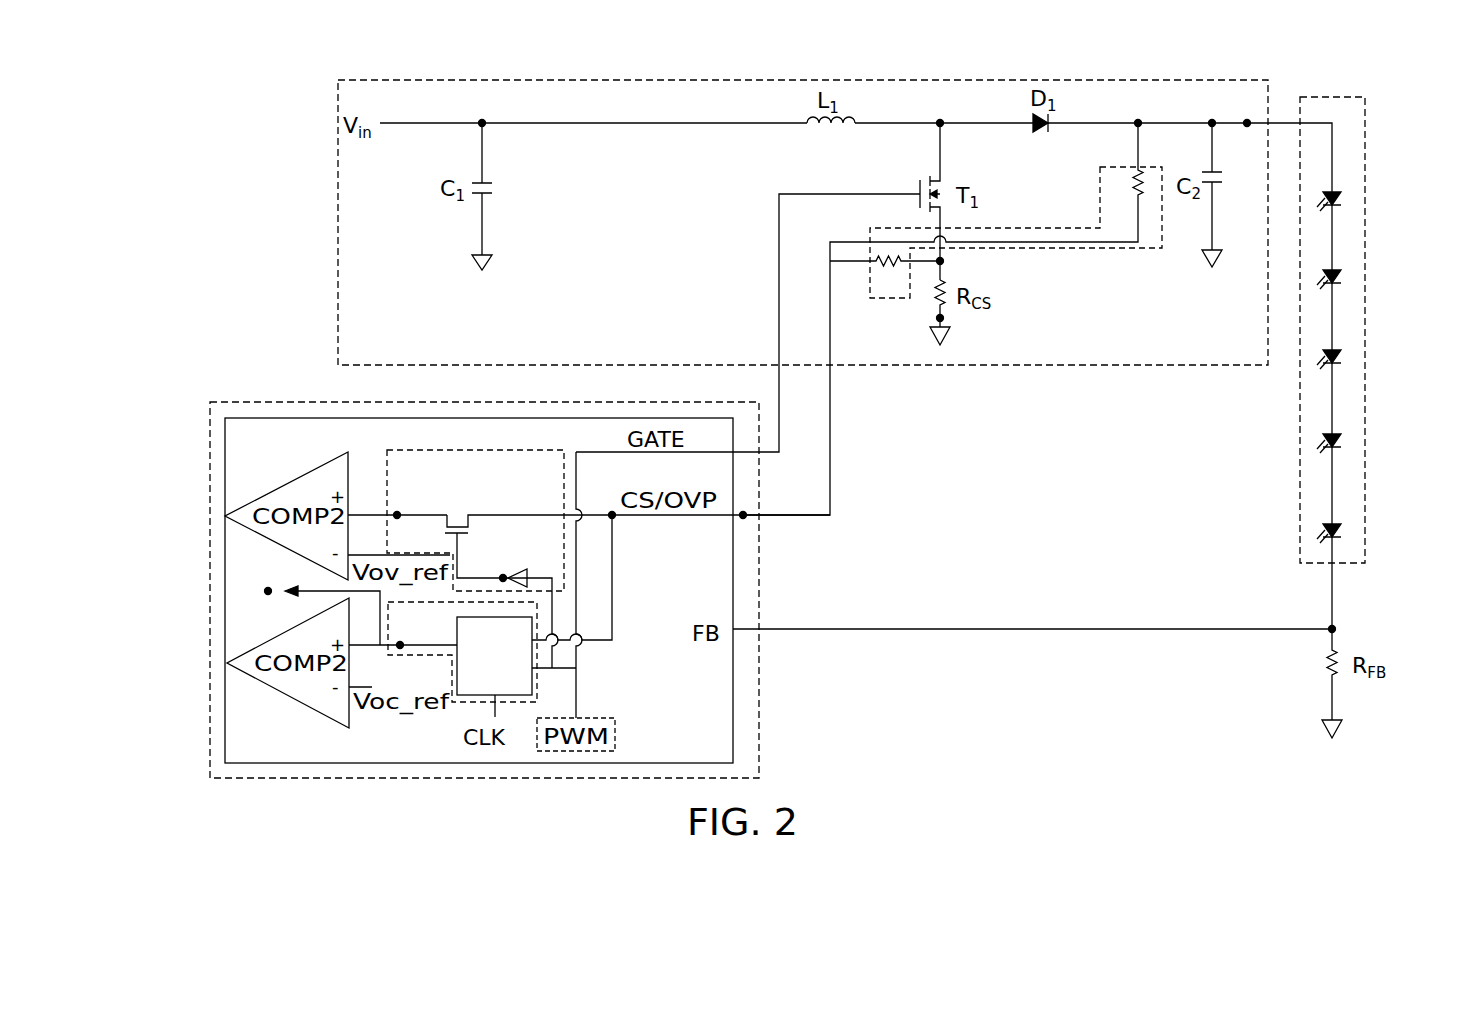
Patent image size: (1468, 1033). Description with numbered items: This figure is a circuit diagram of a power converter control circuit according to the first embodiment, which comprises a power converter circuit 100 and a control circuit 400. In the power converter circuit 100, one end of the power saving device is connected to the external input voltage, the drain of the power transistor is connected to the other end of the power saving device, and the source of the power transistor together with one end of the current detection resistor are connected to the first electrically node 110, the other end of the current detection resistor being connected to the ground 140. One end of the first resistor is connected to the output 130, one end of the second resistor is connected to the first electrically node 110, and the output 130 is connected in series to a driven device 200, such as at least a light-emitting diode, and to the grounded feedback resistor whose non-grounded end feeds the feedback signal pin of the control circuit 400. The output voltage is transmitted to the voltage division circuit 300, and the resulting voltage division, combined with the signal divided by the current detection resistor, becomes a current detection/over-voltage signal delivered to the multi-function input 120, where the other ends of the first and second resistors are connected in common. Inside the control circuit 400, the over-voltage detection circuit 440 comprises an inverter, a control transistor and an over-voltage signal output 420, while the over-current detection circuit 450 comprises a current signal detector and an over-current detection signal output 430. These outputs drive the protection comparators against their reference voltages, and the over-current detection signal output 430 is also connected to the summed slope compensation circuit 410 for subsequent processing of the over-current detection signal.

The power converter circuit 100 is at (703, 80).
The first electrically node 110 is at (945, 263).
The multi-function input 120 is at (746, 518).
The output 130 is at (1247, 122).
The ground 140 is at (945, 321).
The driven device 200 is at (1365, 155).
The voltage division circuit 300 is at (1118, 250).
The control circuit 400 is at (212, 725).
The summed slope compensation circuit 410 is at (268, 592).
The over-voltage signal output 420 is at (399, 514).
The over-current detection signal output 430 is at (421, 635).
The over-voltage detection circuit 440 is at (387, 472).
The over-current detection circuit 450 is at (460, 700).